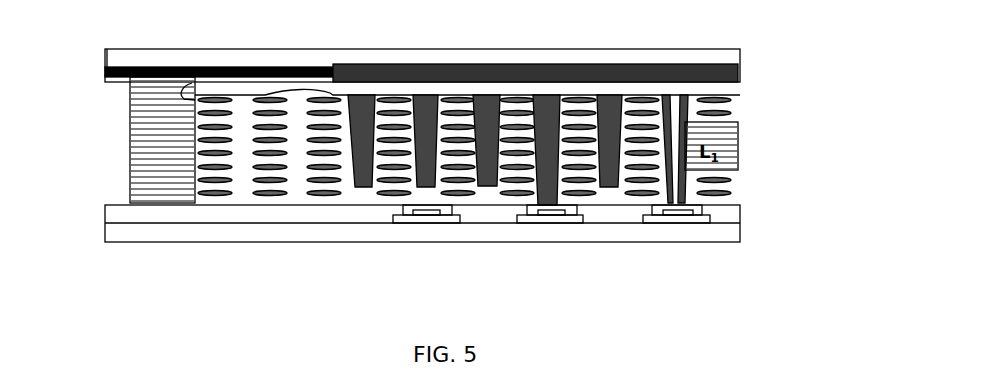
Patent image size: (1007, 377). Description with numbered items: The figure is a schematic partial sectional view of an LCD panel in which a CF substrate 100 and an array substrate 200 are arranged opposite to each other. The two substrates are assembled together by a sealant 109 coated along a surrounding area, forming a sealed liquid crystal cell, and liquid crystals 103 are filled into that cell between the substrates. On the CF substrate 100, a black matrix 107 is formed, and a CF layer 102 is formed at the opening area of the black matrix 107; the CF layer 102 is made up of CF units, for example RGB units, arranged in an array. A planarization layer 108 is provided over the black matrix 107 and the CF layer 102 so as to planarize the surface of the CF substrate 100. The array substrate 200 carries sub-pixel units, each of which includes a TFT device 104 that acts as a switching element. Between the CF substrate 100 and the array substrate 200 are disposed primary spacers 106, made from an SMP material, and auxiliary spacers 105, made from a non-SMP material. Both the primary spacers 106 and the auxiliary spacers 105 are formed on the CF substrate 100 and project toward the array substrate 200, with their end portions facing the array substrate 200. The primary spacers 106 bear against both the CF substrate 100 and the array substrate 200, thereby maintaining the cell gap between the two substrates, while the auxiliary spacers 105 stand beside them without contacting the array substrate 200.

The CF substrate 100 is at (740, 56).
The CF layer 102 is at (582, 90).
The liquid crystals 103 is at (730, 188).
The TFT device 104 is at (688, 222).
The auxiliary spacers 105 is at (607, 176).
The primary spacers 106 is at (548, 200).
The black matrix 107 is at (105, 72).
The planarization layer 108 is at (330, 93).
The sealant 109 is at (112, 140).
The array substrate 200 is at (122, 217).